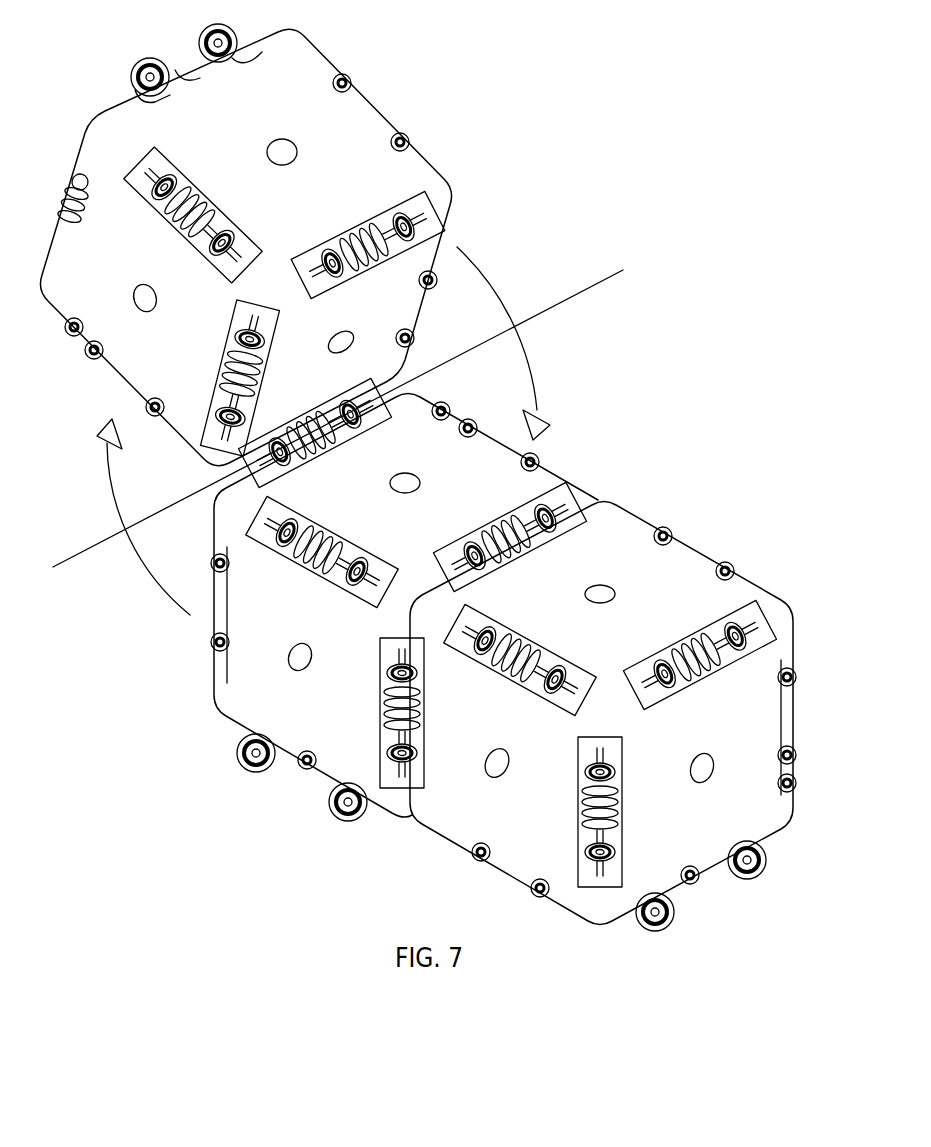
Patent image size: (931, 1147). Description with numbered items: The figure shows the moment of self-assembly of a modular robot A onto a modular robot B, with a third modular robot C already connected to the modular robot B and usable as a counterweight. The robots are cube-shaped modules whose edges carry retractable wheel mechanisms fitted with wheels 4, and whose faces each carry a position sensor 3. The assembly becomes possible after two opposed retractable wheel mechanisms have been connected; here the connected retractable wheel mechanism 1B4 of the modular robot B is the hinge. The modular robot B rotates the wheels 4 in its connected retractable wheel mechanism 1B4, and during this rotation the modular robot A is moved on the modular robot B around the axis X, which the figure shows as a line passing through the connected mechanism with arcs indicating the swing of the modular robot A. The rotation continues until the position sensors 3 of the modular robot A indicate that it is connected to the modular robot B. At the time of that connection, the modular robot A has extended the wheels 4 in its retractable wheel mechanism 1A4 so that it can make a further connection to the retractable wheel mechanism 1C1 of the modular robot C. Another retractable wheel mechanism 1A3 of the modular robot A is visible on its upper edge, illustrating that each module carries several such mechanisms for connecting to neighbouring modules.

The retractable wheel mechanism 1A3 is at (122, 80).
The retractable wheel mechanism 1A4 is at (437, 220).
The retractable wheel mechanism 1B4 is at (255, 455).
The retractable wheel mechanism 1C1 is at (580, 490).
The position sensor 3 is at (340, 340).
The wheels 4 is at (407, 200).
The modular robot A is at (77, 396).
The modular robot B is at (277, 803).
The modular robot C is at (715, 525).
The axis X is at (326, 430).